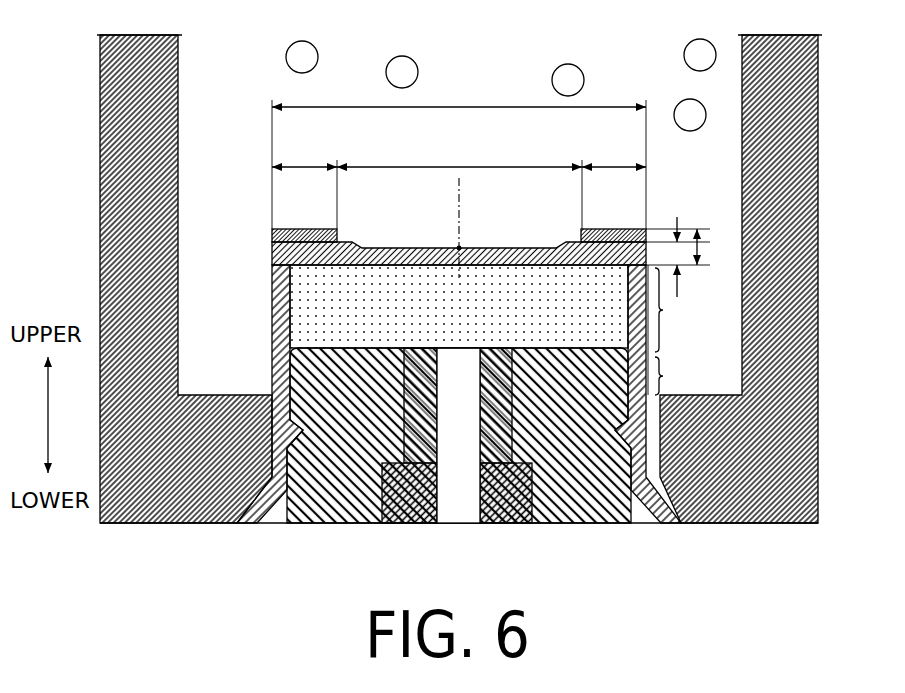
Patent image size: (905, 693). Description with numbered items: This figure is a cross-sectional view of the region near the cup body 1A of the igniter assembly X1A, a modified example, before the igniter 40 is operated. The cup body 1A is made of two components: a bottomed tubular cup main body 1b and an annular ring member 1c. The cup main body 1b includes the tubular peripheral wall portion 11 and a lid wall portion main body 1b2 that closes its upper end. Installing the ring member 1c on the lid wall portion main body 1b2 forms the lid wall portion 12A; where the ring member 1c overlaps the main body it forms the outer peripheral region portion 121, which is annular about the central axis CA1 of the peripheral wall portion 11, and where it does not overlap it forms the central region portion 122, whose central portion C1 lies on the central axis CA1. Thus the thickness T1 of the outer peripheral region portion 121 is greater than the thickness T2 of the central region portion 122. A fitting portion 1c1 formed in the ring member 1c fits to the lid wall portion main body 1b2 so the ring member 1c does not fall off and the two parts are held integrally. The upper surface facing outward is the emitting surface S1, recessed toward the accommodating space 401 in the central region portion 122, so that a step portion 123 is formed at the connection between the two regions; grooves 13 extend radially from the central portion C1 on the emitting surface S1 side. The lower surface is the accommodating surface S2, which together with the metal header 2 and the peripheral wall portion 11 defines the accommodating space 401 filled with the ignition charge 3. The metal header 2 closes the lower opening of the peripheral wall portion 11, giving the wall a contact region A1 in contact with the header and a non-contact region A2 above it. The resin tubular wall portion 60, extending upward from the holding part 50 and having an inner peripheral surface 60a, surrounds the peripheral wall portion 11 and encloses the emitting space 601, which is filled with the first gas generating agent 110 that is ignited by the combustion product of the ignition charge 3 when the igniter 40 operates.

The emitting space 601 is at (247, 90).
The igniter 40 is at (245, 195).
The lid wall portion 12A is at (445, 107).
The first gas generating agent 110 is at (585, 79).
The outer peripheral region portion 121 is at (303, 166).
The central region portion 122 is at (445, 166).
The inner peripheral surface 60a is at (741, 171).
The cup body 1A is at (227, 208).
The ring member 1c is at (271, 236).
The cup main body 1b is at (271, 268).
The fitting portion 1c1 is at (283, 229).
The lid wall portion main body 1b2 is at (356, 240).
The central axis CA1 is at (460, 190).
The central portion C1 is at (459, 248).
The grooves 13 is at (512, 243).
The emitting surface S1 is at (612, 229).
The accommodating surface S2 is at (603, 266).
The step portion 123 is at (352, 266).
The accommodating space 401 is at (482, 318).
The peripheral wall portion 11 is at (272, 298).
The ignition charge 3 is at (305, 330).
The metal header 2 is at (272, 377).
The thickness of outer peripheral region portion T1 is at (690, 247).
The thickness of central region portion T2 is at (682, 260).
The non-contact region A2 is at (675, 330).
The contact region A1 is at (678, 376).
The tubular wall portion 60 is at (820, 312).
The holding part 50 is at (820, 478).
The igniter assembly X1A is at (76, 266).